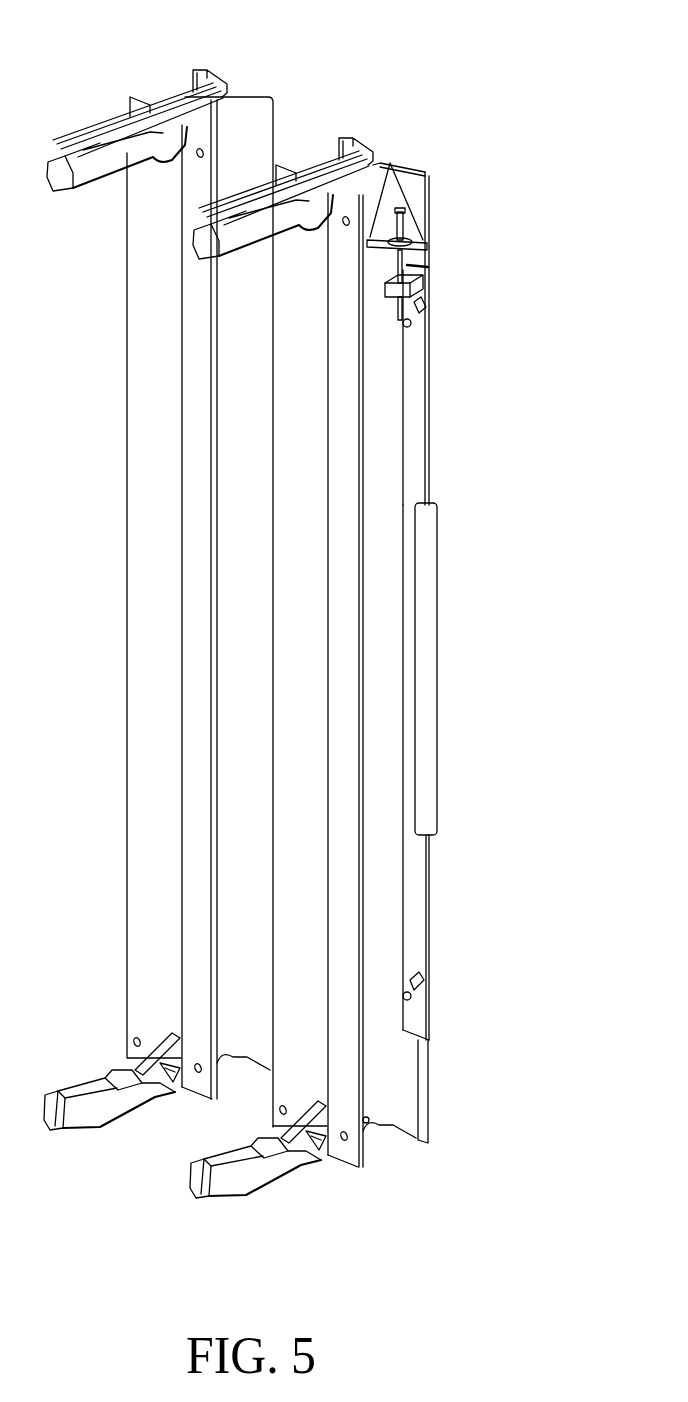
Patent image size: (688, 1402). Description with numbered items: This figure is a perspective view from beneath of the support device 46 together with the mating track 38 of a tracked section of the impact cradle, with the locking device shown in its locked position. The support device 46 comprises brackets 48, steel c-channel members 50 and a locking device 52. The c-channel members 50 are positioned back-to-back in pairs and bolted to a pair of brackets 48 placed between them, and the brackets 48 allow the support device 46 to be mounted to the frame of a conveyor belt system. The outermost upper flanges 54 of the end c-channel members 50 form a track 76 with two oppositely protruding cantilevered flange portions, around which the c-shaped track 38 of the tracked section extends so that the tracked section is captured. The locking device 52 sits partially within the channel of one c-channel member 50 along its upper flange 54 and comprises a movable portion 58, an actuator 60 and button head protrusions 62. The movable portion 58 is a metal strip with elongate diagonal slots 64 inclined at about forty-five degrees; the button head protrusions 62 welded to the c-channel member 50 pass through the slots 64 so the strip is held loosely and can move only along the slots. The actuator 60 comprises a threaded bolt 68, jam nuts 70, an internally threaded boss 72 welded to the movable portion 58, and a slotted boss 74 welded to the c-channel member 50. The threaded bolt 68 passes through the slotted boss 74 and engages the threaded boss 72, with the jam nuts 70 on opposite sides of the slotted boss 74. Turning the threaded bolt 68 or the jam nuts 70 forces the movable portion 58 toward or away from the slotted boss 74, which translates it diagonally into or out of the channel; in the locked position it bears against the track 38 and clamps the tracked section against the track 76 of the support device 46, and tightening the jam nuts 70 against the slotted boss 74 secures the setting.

The track 38 is at (430, 600).
The support device 46 is at (258, 116).
The brackets 48 is at (83, 133).
The c-channel members 50 is at (197, 675).
The locking device 52 is at (418, 483).
The upper flange 54 is at (486, 1091).
The movable portion 58 is at (415, 888).
The actuator 60 is at (428, 266).
The button head protrusions 62 is at (410, 328).
The slots 64 is at (418, 312).
The threaded bolt 68 is at (412, 230).
The jam nuts 70 is at (422, 245).
The internally threaded boss 72 is at (410, 288).
The slotted boss 74 is at (395, 225).
The track 76 is at (405, 1105).